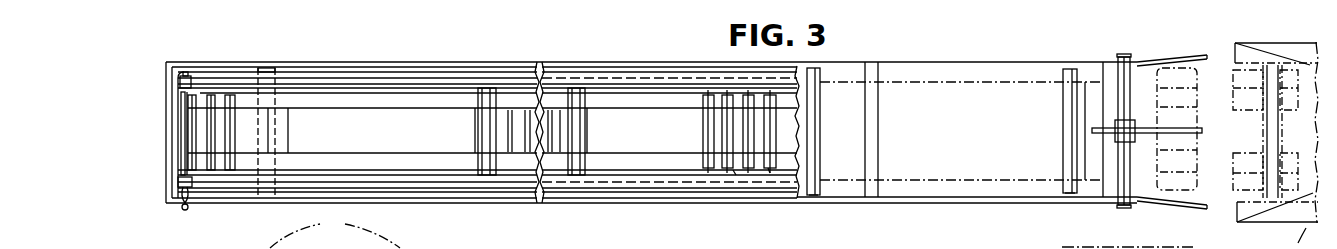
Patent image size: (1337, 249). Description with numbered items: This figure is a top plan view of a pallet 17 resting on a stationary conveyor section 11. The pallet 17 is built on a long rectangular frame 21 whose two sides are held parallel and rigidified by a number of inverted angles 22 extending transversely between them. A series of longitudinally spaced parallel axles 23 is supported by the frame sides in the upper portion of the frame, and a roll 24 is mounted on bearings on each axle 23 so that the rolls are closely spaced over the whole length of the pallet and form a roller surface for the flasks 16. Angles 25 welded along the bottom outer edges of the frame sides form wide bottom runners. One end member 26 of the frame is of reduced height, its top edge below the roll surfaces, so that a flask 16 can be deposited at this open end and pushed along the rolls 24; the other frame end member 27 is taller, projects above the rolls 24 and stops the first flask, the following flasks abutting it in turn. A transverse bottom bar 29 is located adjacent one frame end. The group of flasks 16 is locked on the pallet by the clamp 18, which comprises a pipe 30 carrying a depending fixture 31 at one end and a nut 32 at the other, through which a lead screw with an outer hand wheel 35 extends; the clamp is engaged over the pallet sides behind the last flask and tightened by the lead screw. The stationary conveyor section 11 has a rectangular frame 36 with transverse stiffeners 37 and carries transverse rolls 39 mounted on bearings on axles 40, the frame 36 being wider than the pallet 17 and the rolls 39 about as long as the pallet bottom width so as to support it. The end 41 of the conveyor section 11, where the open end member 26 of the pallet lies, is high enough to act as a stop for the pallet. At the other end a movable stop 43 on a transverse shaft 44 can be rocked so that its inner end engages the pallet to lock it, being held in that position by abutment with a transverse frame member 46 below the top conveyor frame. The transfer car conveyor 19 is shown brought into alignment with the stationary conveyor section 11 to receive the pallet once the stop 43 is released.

The stationary conveyor section 11 is at (942, 57).
The flask 16 is at (731, 230).
The pallet 17 is at (367, 75).
The clamp 18 is at (182, 162).
The transfer car conveyor 19 is at (1282, 223).
The rectangular frame 21 is at (635, 173).
The inverted angle 22 is at (475, 137).
The axle 23 is at (768, 168).
The roll 24 is at (240, 163).
The angle 25 is at (640, 78).
The end member 26 is at (172, 118).
The frame end member 27 is at (1198, 98).
The bar 29 is at (287, 128).
The pipe 30 is at (182, 142).
The depending fixture 31 is at (192, 82).
The nut 32 is at (178, 188).
The hand wheel 35 is at (183, 210).
The rectangular frame 36 is at (410, 65).
The transverse stiffener 37 is at (472, 118).
The transverse roll 39 is at (265, 143).
The axle 40 is at (815, 197).
The end 41 is at (166, 95).
The movable stop 43 is at (1178, 128).
The transverse shaft 44 is at (1120, 78).
The transverse frame member 46 is at (1092, 108).